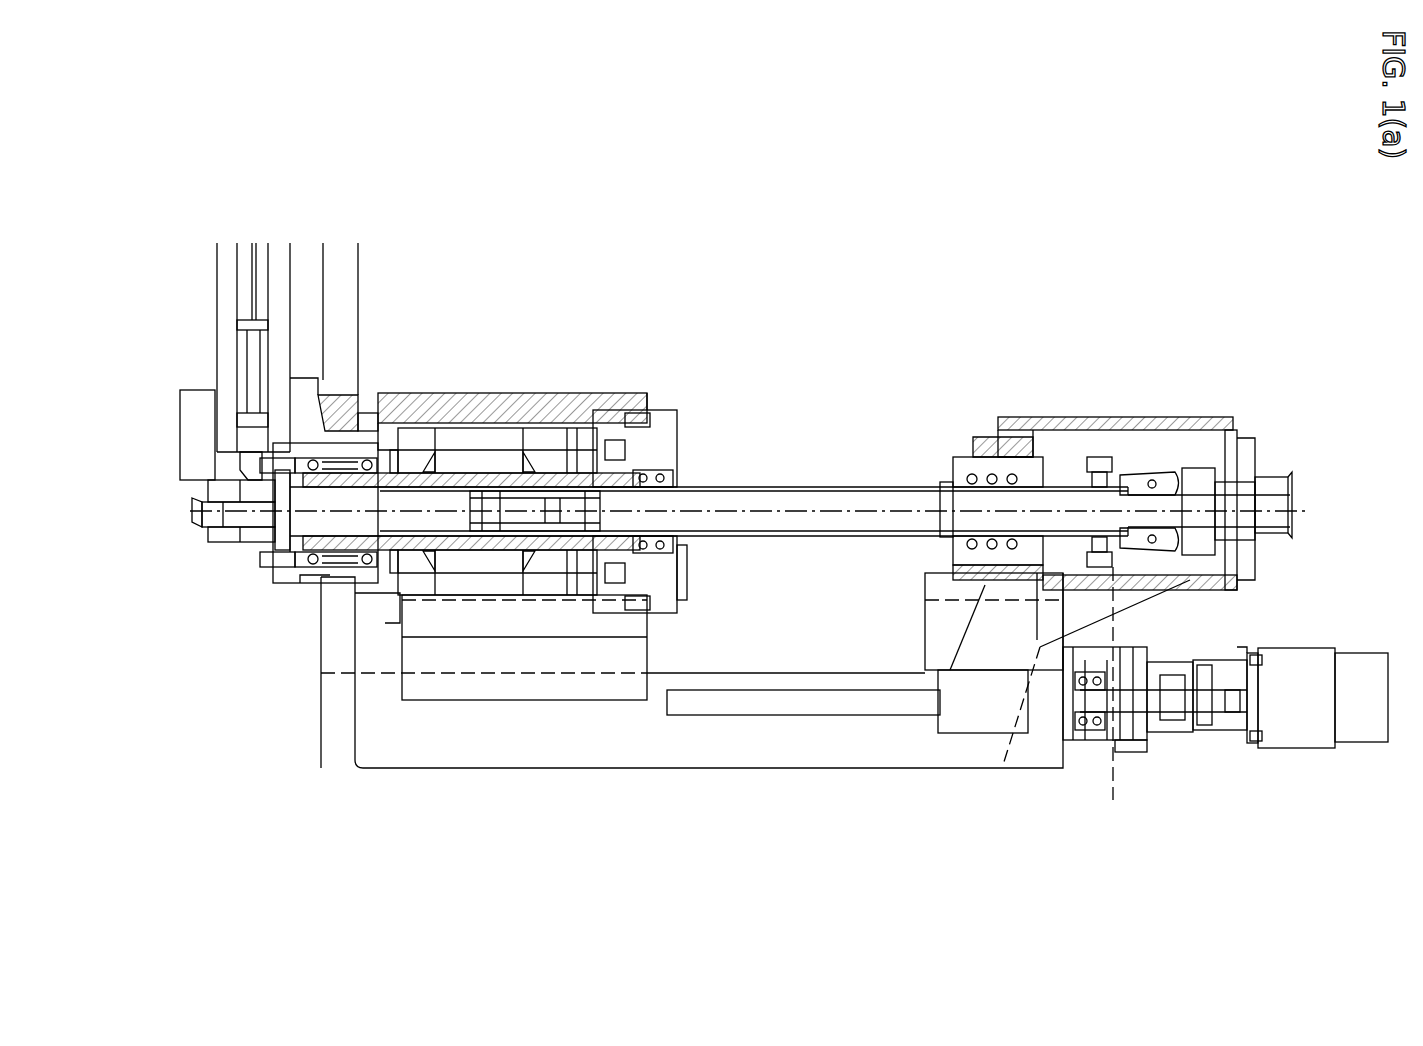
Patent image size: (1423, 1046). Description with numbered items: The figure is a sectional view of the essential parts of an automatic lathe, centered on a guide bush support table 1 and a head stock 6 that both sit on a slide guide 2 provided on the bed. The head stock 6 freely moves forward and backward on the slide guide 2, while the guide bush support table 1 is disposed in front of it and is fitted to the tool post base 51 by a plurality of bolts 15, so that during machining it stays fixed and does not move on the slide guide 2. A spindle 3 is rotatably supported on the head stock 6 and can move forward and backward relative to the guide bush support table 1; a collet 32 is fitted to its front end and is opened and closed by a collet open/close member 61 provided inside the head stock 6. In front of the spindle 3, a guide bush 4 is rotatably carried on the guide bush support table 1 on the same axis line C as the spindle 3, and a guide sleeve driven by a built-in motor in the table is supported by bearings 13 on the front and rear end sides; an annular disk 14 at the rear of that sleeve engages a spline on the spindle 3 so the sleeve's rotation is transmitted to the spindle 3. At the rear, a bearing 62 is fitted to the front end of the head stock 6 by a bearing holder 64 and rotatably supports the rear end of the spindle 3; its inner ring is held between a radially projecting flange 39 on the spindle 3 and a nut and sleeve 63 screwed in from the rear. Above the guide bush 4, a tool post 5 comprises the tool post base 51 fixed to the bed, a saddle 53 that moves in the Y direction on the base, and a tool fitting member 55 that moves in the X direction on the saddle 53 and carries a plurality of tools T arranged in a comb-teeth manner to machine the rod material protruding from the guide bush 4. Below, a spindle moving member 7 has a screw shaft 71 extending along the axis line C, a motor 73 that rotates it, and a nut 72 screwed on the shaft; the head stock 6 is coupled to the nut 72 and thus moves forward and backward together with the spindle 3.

The guide bush support table 1 is at (478, 392).
The slide guide 2 is at (748, 632).
The spindle 3 is at (736, 482).
The guide bush 4 is at (198, 524).
The tool post 5 is at (293, 312).
The head stock 6 is at (1157, 415).
The spindle moving member 7 is at (1088, 780).
The bearings 13 is at (617, 403).
The annular disk 14 is at (680, 548).
The bolts 15 is at (340, 410).
The collet 32 is at (490, 475).
The flange 39 is at (947, 547).
The tool post base 51 is at (345, 268).
The saddle 53 is at (285, 262).
The tool fitting member 55 is at (215, 350).
The collet open/close member 61 is at (1182, 457).
The bearing 62 is at (990, 453).
The nut and sleeve 63 is at (925, 608).
The bearing holder 64 is at (990, 440).
The screw shaft 71 is at (808, 708).
The nut 72 is at (972, 722).
The motor 73 is at (1285, 748).
The axis line C is at (796, 513).
The tools T is at (190, 503).